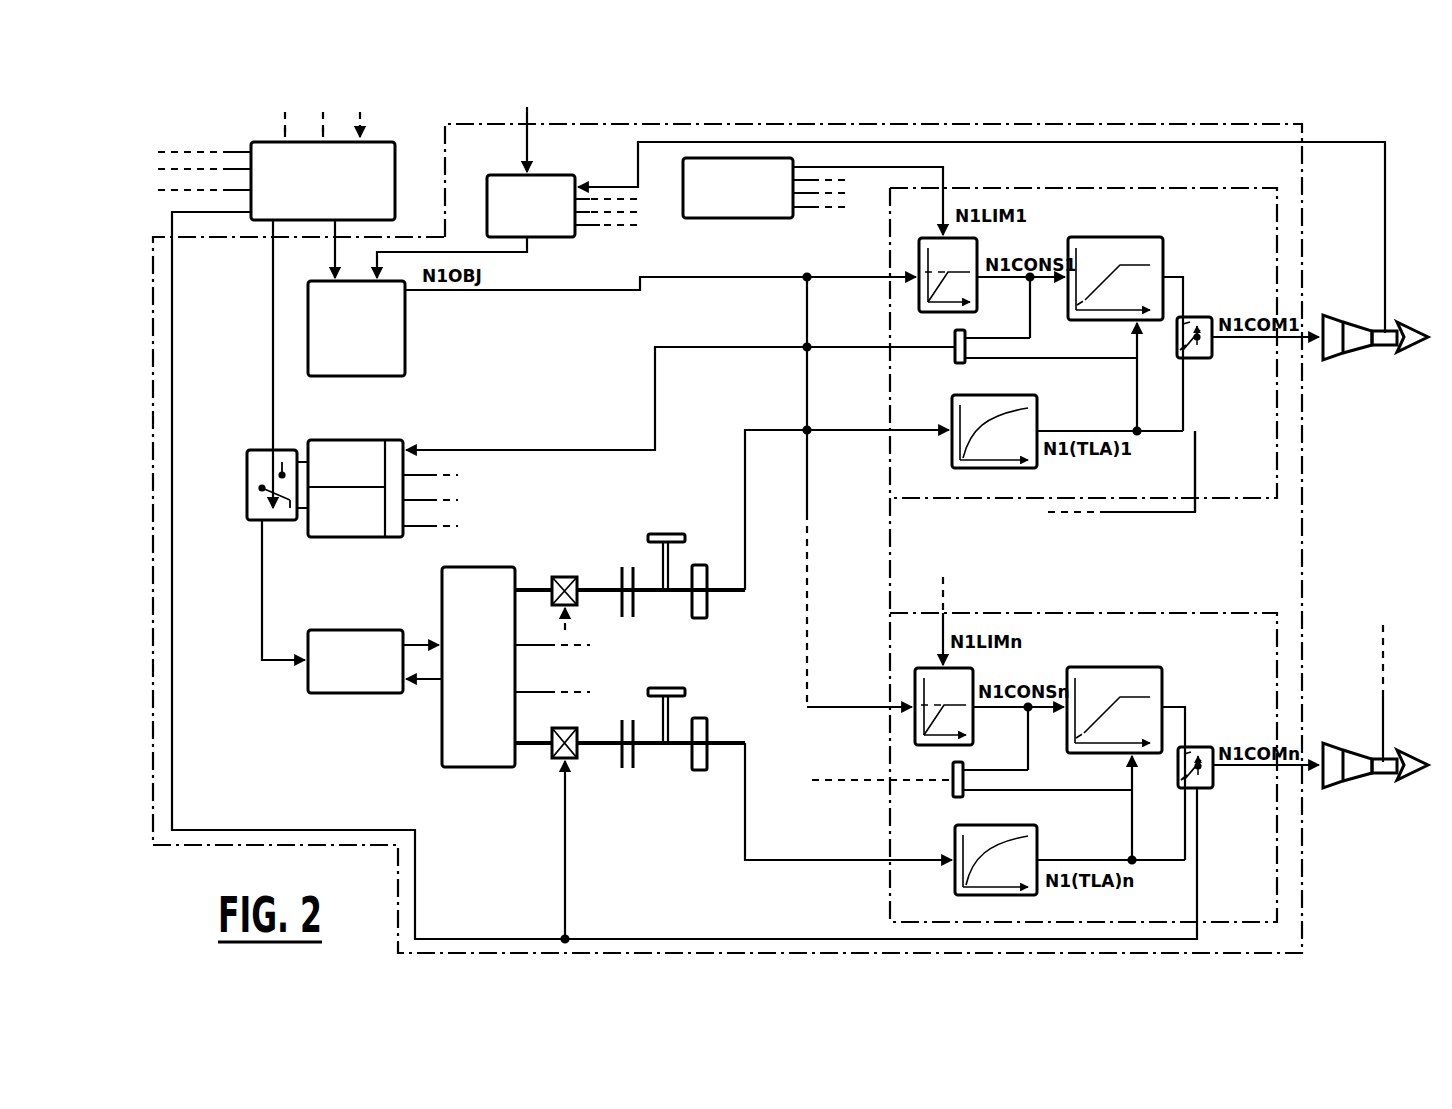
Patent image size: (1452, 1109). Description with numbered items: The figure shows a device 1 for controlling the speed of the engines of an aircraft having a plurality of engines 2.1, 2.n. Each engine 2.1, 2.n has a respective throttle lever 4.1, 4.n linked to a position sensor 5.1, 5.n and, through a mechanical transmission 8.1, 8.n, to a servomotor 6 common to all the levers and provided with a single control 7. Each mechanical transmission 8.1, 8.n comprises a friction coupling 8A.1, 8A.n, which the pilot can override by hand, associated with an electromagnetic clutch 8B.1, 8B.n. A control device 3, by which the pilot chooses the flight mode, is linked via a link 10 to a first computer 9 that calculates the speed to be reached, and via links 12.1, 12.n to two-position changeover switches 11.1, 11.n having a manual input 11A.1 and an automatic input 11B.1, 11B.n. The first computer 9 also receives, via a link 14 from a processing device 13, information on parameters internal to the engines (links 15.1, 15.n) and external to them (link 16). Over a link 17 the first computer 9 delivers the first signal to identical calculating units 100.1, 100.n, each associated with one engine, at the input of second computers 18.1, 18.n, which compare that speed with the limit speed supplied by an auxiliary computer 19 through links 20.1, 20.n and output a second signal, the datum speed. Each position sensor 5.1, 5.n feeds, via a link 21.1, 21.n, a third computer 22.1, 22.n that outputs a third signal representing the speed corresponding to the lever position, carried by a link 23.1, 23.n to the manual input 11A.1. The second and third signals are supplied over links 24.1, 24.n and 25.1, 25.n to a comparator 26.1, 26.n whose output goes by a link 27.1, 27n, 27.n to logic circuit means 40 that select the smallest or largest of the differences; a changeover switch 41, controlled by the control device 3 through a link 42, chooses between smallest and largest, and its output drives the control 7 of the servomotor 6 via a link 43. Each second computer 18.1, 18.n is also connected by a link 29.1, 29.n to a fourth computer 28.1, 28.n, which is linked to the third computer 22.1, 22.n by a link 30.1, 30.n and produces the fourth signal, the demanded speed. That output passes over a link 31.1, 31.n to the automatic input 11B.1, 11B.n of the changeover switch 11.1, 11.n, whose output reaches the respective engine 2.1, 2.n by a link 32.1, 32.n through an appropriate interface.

The device for controlling the speed of the engines 1 is at (1330, 524).
The engine 2.1 is at (1360, 330).
The engine 2.n is at (1362, 756).
The control device 3 is at (395, 166).
The throttle lever 4.1 is at (663, 533).
The throttle lever 4.n is at (680, 688).
The position sensor 5.1 is at (700, 565).
The position sensor 5.n is at (708, 725).
The servomotor 6 is at (442, 722).
The control 7 is at (348, 633).
The mechanical transmission 8.1 is at (595, 618).
The mechanical transmission 8.n is at (658, 787).
The friction coupling 8A.1 is at (622, 564).
The friction coupling 8A.n is at (622, 767).
The electromagnetic clutch 8B.1 is at (565, 577).
The electromagnetic clutch 8B.n is at (553, 759).
The first computer 9 is at (356, 373).
The link 10 is at (335, 250).
The changeover switch 11.1 is at (1206, 360).
The changeover switch 11.n is at (1208, 798).
The manual input 11A.1 is at (1180, 349).
The automatic input 11B.1 is at (1184, 324).
The automatic input 11B.n is at (1186, 752).
The link 12.1 is at (221, 150).
The link 12.n is at (708, 938).
The processing device 13 is at (554, 237).
The link 14 is at (463, 252).
The link 15.1 is at (1385, 238).
The link 15.n is at (602, 225).
The link 16 is at (527, 159).
The link 17 is at (809, 277).
The second computer 18.1 is at (975, 246).
The second computer 18.n is at (970, 676).
The auxiliary computer 19 is at (714, 203).
The link 20.1 is at (943, 198).
The link 20.n is at (806, 218).
The link 21.1 is at (783, 428).
The link 21.n is at (850, 860).
The third computer 22.1 is at (1037, 462).
The third computer 22.n is at (1037, 887).
The link 23.1 is at (1175, 432).
The link 23.n is at (1175, 862).
The link 24.1 is at (999, 338).
The link 24.n is at (996, 770).
The link 25.1 is at (1045, 364).
The link 25.n is at (1065, 790).
The comparator 26.1 is at (957, 363).
The comparator 26.n is at (953, 793).
The link 27.1 is at (783, 347).
The link 27n is at (420, 530).
The link 27.n is at (858, 780).
The fourth computer 28.1 is at (1110, 240).
The fourth computer 28.n is at (1126, 668).
The link 29.1 is at (1031, 291).
The link 29.n is at (1038, 717).
The link 30.1 is at (1137, 338).
The link 30.n is at (1130, 780).
The link 31.1 is at (1183, 278).
The link 31.n is at (1185, 708).
The link 32.1 is at (1295, 339).
The link 32.n is at (1293, 767).
The logic circuit means 40 is at (365, 443).
The changeover switch 41 is at (247, 478).
The link 42 is at (272, 345).
The link 43 is at (262, 583).
The calculating unit 100.1 is at (1247, 498).
The calculating unit 100.n is at (1164, 608).